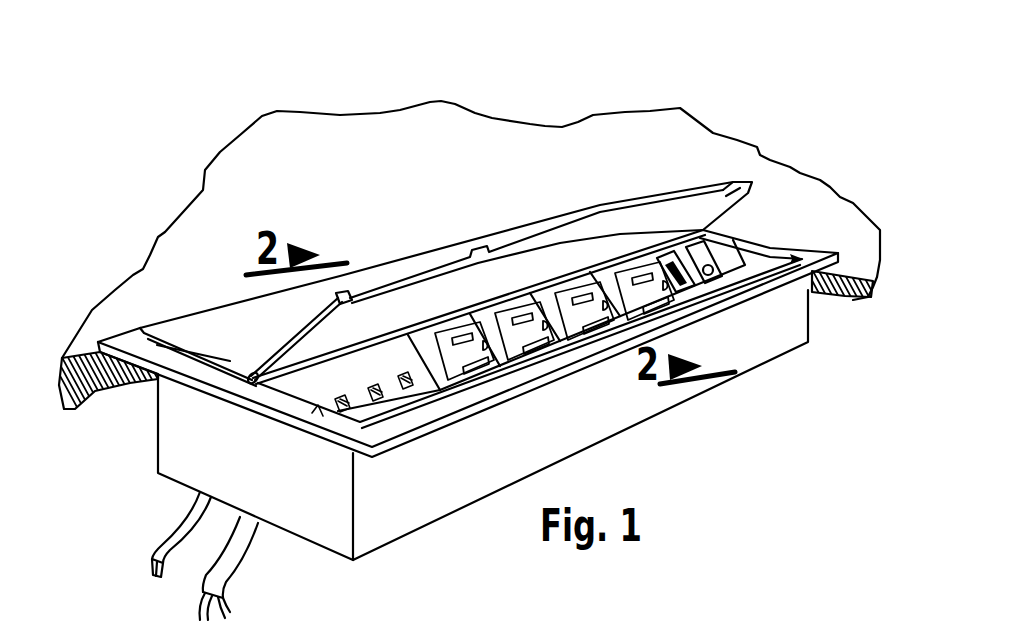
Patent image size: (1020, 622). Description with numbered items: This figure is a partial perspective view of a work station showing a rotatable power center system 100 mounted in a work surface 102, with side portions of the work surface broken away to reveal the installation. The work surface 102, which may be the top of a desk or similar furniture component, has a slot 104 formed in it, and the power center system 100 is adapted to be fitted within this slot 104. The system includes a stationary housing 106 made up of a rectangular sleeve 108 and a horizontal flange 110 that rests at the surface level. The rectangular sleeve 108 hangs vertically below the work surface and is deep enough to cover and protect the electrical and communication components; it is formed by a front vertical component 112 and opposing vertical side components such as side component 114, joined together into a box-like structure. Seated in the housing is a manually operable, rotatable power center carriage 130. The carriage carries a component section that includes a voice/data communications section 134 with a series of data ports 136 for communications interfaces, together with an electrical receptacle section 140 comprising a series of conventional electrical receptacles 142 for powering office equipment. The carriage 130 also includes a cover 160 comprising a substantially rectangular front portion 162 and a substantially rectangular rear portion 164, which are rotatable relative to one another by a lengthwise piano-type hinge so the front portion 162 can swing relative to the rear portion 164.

The power center system 100 is at (835, 337).
The work surface 102 is at (485, 318).
The slot 104 is at (830, 301).
The stationary housing 106 is at (657, 160).
The rectangular sleeve 108 is at (110, 487).
The horizontal flange 110 is at (812, 258).
The front vertical component 112 is at (403, 523).
The vertical side component 114 is at (333, 530).
The power center carriage 130 is at (790, 254).
The voice/data communications section 134 is at (277, 385).
The data ports 136 is at (368, 385).
The electrical receptacle section 140 is at (570, 360).
The electrical receptacles 142 is at (662, 290).
The cover 160 is at (461, 160).
The front portion 162 is at (764, 224).
The rear portion 164 is at (211, 313).